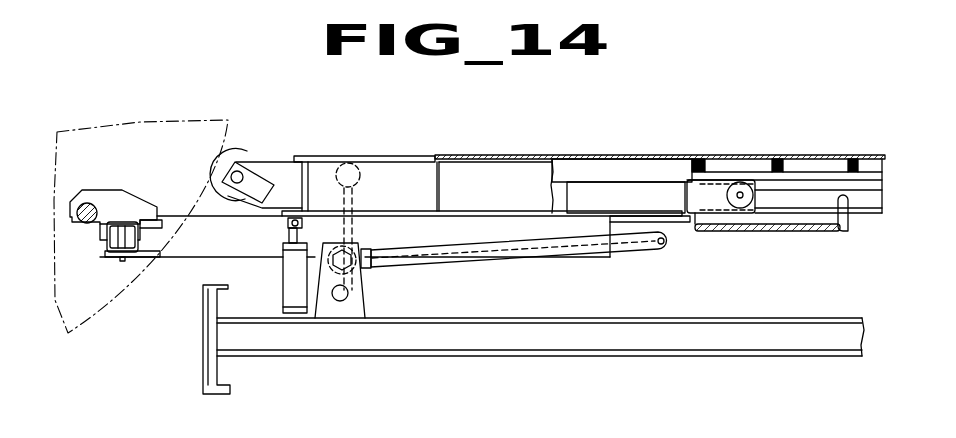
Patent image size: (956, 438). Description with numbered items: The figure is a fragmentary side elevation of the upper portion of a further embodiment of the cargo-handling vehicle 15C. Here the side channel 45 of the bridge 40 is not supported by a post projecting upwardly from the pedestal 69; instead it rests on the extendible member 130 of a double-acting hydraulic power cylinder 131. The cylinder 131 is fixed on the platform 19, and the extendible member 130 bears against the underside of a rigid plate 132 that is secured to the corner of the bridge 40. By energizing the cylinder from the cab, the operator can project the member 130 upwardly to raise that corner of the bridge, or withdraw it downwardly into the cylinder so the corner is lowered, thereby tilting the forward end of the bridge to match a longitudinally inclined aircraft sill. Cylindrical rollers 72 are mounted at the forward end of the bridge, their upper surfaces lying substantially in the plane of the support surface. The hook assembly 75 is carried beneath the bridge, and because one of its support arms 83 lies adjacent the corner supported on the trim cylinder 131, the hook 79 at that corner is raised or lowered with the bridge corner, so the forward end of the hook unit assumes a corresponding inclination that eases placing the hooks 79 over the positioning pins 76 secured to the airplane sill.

The cargo-handling vehicle 15C is at (549, 118).
The side channel 45 is at (480, 157).
The bridge 40 is at (656, 144).
The rigid plate 132 is at (282, 214).
The support arm 83 is at (190, 250).
The cylindrical roller 72 is at (247, 150).
The hook 79 is at (102, 190).
The hook assembly 75 is at (138, 192).
The positioning pin 76 is at (84, 223).
The extendible member 130 is at (288, 234).
The double-acting hydraulic power cylinder 131 is at (284, 289).
The pedestal 69 is at (362, 305).
The platform 19 is at (545, 316).